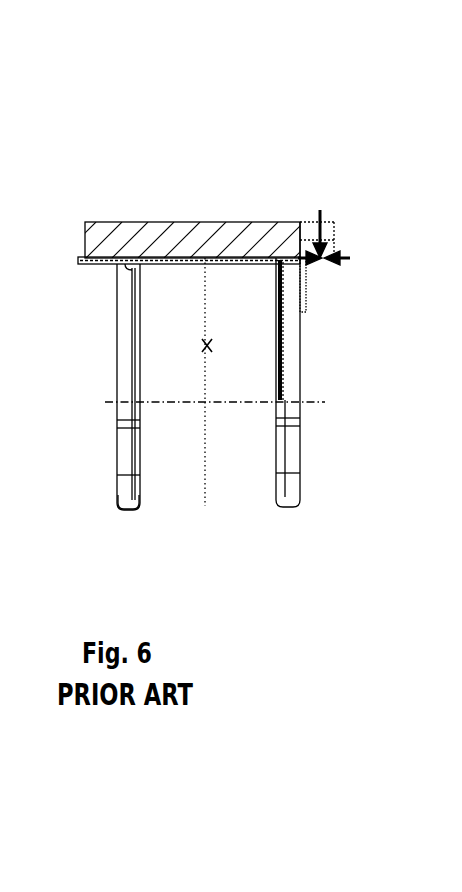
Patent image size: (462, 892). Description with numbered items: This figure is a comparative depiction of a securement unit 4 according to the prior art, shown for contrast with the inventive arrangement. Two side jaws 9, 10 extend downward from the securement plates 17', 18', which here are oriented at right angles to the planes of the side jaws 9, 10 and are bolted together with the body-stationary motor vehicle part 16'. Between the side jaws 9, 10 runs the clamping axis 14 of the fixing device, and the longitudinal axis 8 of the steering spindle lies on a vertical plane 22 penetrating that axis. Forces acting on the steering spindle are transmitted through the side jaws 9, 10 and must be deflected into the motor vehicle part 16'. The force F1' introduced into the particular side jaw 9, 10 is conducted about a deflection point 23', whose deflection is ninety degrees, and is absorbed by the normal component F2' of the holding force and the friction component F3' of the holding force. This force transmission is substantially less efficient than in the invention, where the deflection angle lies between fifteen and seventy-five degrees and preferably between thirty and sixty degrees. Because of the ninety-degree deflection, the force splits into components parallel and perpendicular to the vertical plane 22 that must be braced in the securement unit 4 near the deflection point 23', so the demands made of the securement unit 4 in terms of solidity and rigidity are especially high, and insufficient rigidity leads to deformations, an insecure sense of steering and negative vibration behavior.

The body-stationary motor vehicle part 16' is at (197, 177).
The securement plate 17' is at (189, 181).
The securement plate 18' is at (272, 178).
The side jaw 9 is at (132, 370).
The securement unit 4 is at (126, 531).
The side jaw 10 is at (285, 465).
The clamping axis 14 is at (237, 402).
The deflection point 23' is at (365, 302).
The longitudinal axis 8 is at (215, 348).
The vertical plane 22 is at (208, 493).
The force F1' is at (300, 241).
The normal component of the holding force F2' is at (330, 226).
The friction component of the holding force F3' is at (347, 270).